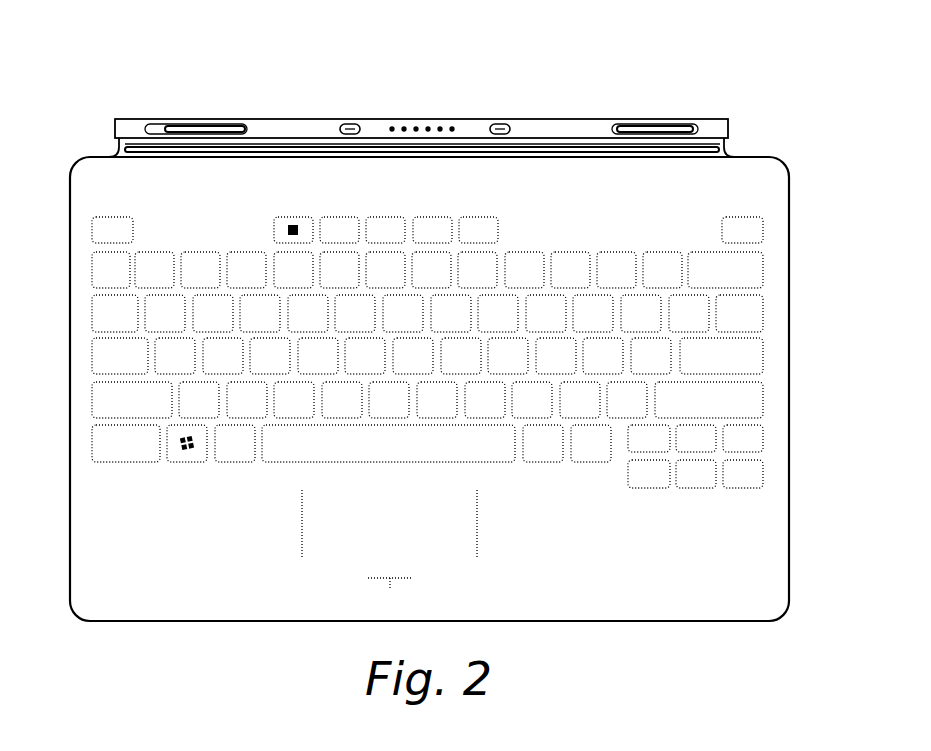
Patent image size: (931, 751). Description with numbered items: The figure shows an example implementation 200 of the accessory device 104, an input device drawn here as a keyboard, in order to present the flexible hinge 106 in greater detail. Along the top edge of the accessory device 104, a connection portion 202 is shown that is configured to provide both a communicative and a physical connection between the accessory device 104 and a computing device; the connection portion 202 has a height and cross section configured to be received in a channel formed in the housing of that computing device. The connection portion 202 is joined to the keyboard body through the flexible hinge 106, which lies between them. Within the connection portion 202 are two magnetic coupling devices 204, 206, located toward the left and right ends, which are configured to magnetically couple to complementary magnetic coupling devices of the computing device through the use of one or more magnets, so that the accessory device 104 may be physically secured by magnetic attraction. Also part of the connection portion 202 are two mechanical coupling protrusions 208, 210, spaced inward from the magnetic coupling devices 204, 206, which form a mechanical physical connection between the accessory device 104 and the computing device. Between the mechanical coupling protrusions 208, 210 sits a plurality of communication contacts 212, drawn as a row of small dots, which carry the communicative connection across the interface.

The example implementation 200 is at (138, 71).
The accessory device 104 is at (131, 606).
The flexible hinge 106 is at (744, 132).
The connection portion 202 is at (128, 119).
The magnetic coupling device 204 is at (180, 127).
The magnetic coupling device 206 is at (652, 126).
The mechanical coupling protrusion 208 is at (347, 126).
The mechanical coupling protrusion 210 is at (501, 126).
The communication contacts 212 is at (425, 101).